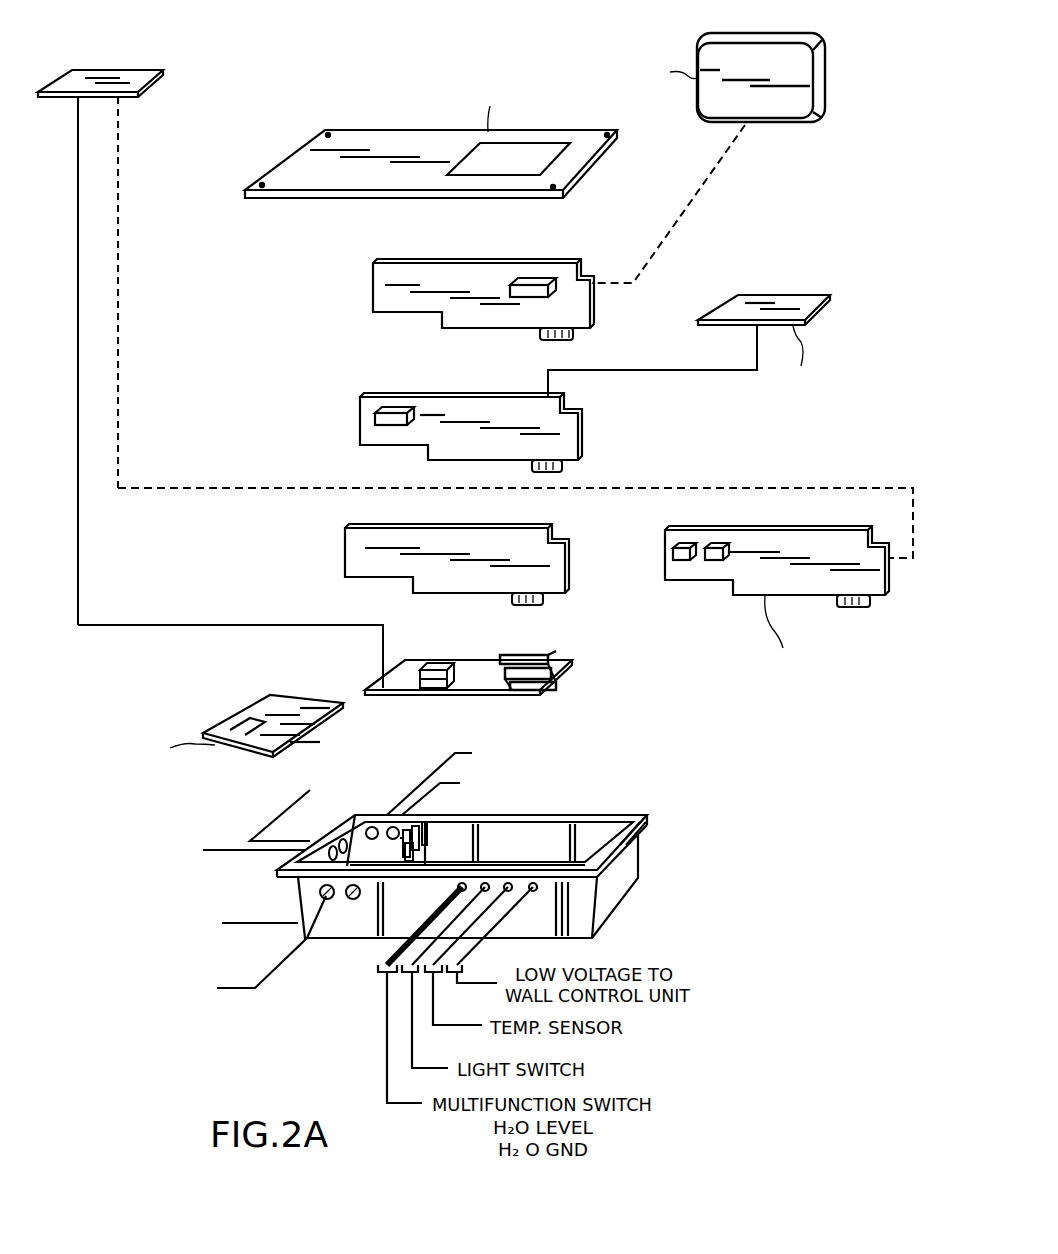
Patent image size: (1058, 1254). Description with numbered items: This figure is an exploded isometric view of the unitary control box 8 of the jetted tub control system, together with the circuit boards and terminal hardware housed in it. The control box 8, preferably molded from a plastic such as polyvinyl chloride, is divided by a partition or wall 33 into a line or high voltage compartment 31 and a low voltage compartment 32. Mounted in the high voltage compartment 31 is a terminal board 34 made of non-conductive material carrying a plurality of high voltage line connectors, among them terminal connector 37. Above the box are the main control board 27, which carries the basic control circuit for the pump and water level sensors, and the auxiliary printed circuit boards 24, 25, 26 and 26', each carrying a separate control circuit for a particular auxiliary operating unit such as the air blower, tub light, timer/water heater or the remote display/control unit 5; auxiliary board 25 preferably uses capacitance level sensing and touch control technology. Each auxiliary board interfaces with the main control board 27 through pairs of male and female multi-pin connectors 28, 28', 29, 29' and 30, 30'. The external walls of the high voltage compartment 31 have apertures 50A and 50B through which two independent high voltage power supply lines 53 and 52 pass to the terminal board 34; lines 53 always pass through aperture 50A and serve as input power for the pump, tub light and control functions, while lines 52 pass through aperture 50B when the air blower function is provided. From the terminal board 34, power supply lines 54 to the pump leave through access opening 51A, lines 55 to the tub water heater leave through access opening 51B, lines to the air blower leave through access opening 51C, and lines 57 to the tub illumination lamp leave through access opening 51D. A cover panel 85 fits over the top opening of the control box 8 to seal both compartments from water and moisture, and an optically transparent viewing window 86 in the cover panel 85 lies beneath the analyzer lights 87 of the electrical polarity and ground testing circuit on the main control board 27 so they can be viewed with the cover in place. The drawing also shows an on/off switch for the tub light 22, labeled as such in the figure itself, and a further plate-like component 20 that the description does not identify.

The remote display/control unit 5 is at (826, 66).
The unitary control box 8 is at (620, 903).
The wall plate 20 is at (165, 74).
The on/off switch for tub light 22 is at (800, 297).
The auxiliary printed circuit board 24 is at (378, 283).
The auxiliary printed circuit board 25 is at (360, 416).
The auxiliary printed circuit board 26 is at (352, 549).
The auxiliary printed circuit board 26' is at (786, 608).
The main control board 27 is at (365, 688).
The multi-pin connector 28 is at (578, 340).
The multi-pin connector 28' is at (526, 655).
The multi-pin connector 29 is at (569, 468).
The multi-pin connector 29' is at (497, 703).
The multi-pin connector 30 is at (704, 612).
The multi-pin connector 30' is at (579, 685).
The high voltage compartment 31 is at (372, 858).
The low voltage compartment 32 is at (637, 833).
The partition 33 is at (374, 857).
The terminal board 34 is at (225, 722).
The terminal connector 37 is at (420, 845).
The aperture 50A is at (366, 827).
The aperture 50B is at (320, 892).
The access opening 51A is at (330, 845).
The access opening 51B is at (350, 899).
The access opening 51C is at (432, 820).
The access opening 51D is at (373, 826).
The power supply lines 52 is at (243, 925).
The power supply lines 53 is at (276, 822).
The power supply lines 54 is at (226, 852).
The power supply lines 55 is at (235, 990).
The power supply lines 57 is at (455, 754).
The cover panel 85 is at (367, 135).
The viewing window 86 is at (543, 147).
The analyzer lights 87 is at (483, 677).